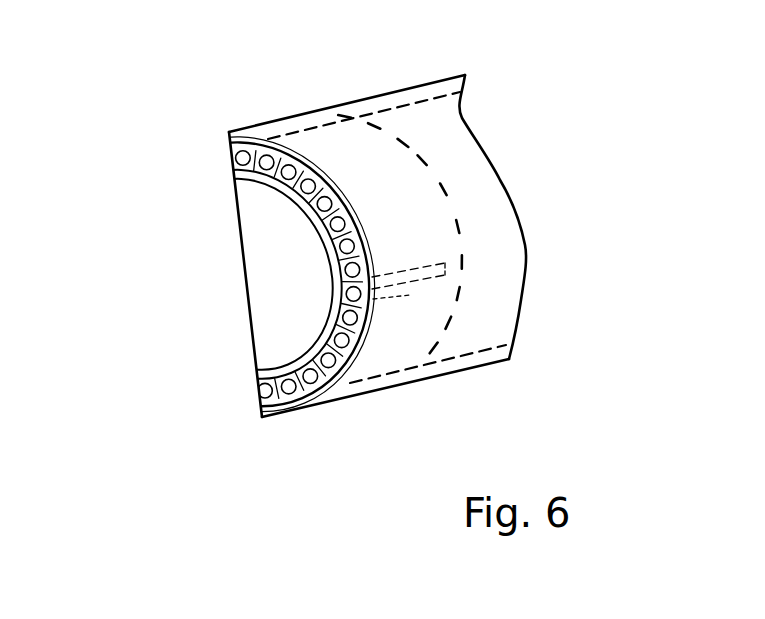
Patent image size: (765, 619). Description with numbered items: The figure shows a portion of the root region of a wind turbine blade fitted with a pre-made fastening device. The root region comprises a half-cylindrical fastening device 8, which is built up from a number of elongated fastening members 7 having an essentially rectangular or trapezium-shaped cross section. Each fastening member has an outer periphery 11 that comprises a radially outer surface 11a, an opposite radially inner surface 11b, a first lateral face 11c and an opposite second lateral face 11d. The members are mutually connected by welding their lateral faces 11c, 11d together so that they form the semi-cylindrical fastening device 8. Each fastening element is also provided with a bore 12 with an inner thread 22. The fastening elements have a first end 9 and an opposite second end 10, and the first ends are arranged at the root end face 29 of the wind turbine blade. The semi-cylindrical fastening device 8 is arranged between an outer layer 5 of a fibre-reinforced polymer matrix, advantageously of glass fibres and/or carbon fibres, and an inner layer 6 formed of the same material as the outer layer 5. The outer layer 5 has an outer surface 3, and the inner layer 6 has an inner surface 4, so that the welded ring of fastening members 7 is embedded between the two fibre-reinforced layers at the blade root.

The outer surface 3 is at (254, 135).
The inner surface 4 is at (248, 168).
The outer layer 5 is at (274, 410).
The inner layer 6 is at (279, 200).
The elongated fastening member 7 is at (225, 155).
The half-cylindrical fastening device 8 is at (464, 184).
The first end 9 is at (262, 383).
The second end 10 is at (425, 300).
The outer periphery 11 is at (326, 177).
The radially outer surface 11a is at (322, 202).
The radially inner surface 11b is at (286, 178).
The first lateral face 11c is at (336, 210).
The second lateral face 11d is at (358, 267).
The bore 12 is at (507, 272).
The inner thread 22 is at (422, 288).
The root end face 29 is at (343, 363).